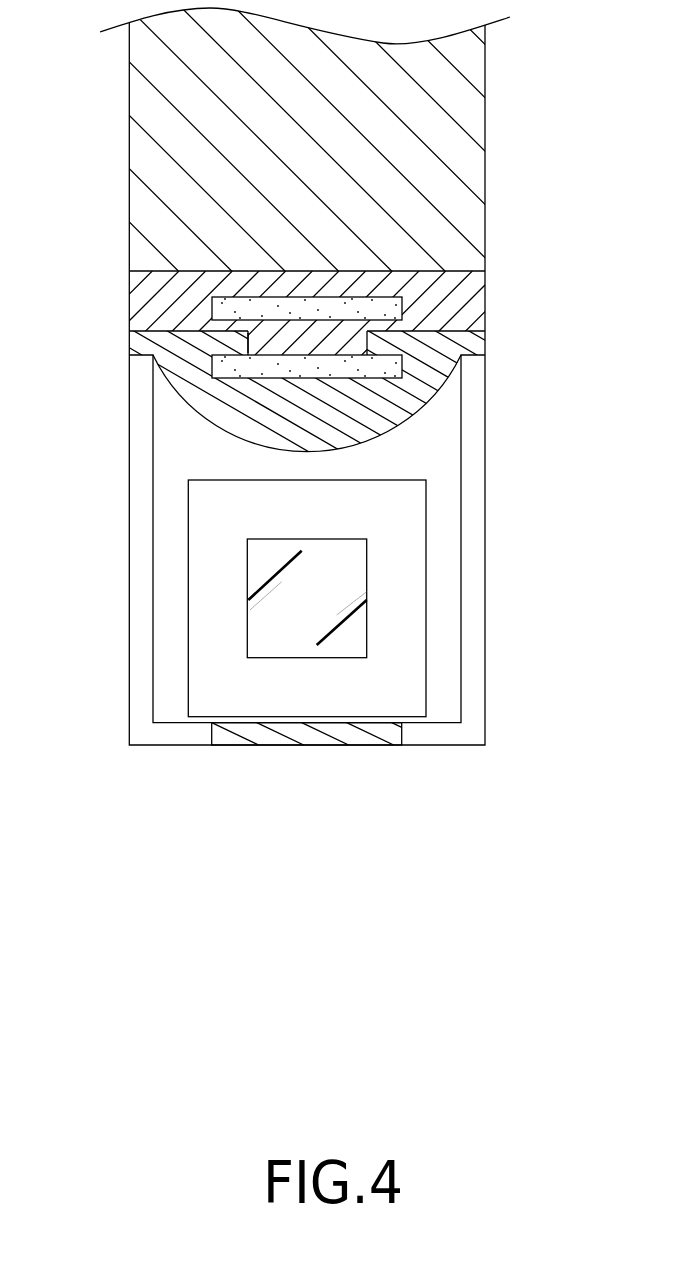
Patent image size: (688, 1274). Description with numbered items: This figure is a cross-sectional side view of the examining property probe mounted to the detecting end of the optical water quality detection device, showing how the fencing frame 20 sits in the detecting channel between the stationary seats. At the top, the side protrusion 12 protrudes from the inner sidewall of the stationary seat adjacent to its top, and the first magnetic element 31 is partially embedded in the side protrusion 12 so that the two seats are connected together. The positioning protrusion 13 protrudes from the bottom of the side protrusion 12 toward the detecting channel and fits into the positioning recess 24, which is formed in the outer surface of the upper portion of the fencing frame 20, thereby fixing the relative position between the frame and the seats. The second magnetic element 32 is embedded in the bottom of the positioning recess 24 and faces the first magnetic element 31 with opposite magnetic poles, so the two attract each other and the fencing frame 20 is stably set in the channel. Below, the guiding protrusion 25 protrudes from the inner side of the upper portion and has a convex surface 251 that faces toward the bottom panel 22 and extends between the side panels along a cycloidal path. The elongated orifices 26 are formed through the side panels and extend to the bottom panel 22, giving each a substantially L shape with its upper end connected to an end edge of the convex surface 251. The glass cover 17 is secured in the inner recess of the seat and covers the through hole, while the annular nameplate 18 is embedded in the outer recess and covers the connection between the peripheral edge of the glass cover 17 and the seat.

The side protrusion 12 is at (148, 283).
The positioning protrusion 13 is at (250, 343).
The glass cover 17 is at (347, 570).
The nameplate 18 is at (408, 640).
The fencing frame 20 is at (323, 564).
The bottom panel 22 is at (258, 733).
The positioning recess 24 is at (360, 330).
The guiding protrusion 25 is at (315, 344).
The convex surface 251 is at (392, 421).
The elongated orifice 26 is at (142, 595).
The first magnetic element 31 is at (393, 299).
The second magnetic element 32 is at (387, 367).